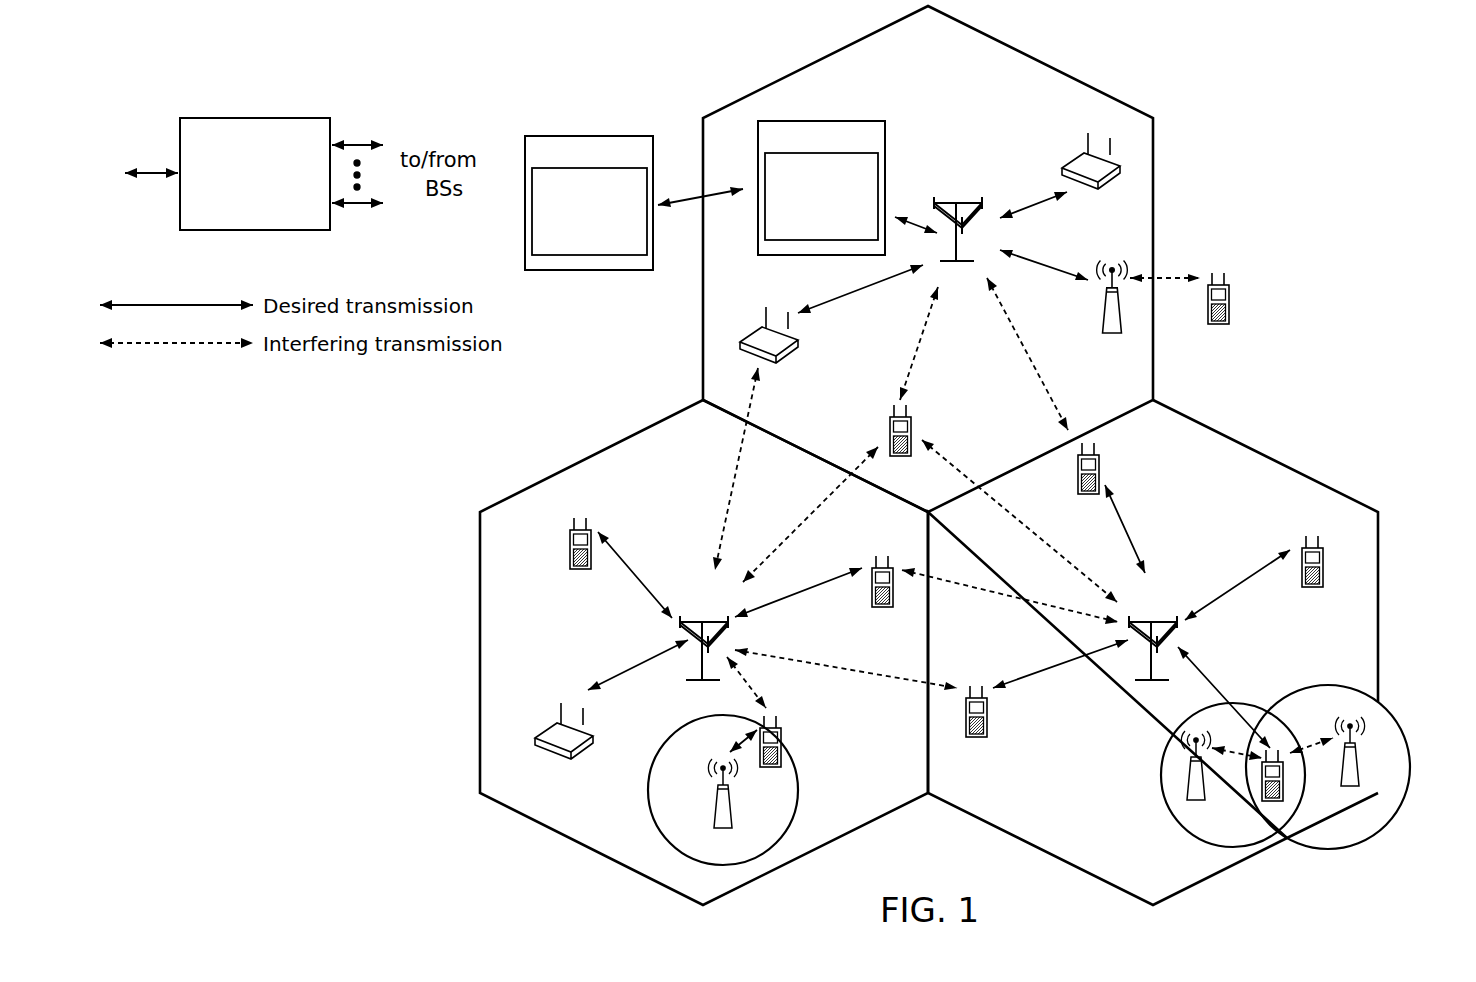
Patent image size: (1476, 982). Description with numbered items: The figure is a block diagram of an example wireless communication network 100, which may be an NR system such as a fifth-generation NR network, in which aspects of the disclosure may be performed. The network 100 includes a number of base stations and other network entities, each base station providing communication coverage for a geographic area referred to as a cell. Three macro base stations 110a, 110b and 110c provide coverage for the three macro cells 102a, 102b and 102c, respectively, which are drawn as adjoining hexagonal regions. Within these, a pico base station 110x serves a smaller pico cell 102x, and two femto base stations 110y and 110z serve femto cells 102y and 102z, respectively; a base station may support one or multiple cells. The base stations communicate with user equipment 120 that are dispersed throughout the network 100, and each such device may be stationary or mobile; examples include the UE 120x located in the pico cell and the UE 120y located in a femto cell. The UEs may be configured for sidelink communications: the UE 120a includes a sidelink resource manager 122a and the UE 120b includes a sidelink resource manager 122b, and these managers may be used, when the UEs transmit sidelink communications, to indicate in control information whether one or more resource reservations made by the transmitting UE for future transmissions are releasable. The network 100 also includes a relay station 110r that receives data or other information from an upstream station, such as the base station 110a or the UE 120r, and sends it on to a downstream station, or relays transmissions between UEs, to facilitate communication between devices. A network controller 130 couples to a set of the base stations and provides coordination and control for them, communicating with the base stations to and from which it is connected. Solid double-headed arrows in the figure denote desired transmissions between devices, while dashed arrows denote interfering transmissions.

The wireless communication network 100 is at (1306, 80).
The macro cell 102a is at (1045, 62).
The macro cell 102b is at (580, 462).
The macro cell 102c is at (1282, 462).
The pico cell 102x is at (672, 740).
The femto cell 102y is at (1162, 745).
The femto cell 102z is at (1352, 685).
The macro base station 110a is at (965, 210).
The macro base station 110b is at (704, 618).
The macro base station 110c is at (1154, 618).
The relay station 110r is at (1100, 330).
The pico base station 110x is at (733, 820).
The femto base station 110y is at (1205, 800).
The femto base station 110z is at (1358, 782).
The user equipment 120 is at (1094, 164).
The user equipment 120a is at (795, 173).
The user equipment 120b is at (559, 189).
The user equipment 120r is at (1228, 316).
The user equipment 120x is at (782, 744).
The user equipment 120y is at (1262, 790).
The sidelink resource manager 122a is at (765, 218).
The sidelink resource manager 122b is at (532, 234).
The network controller 130 is at (262, 106).